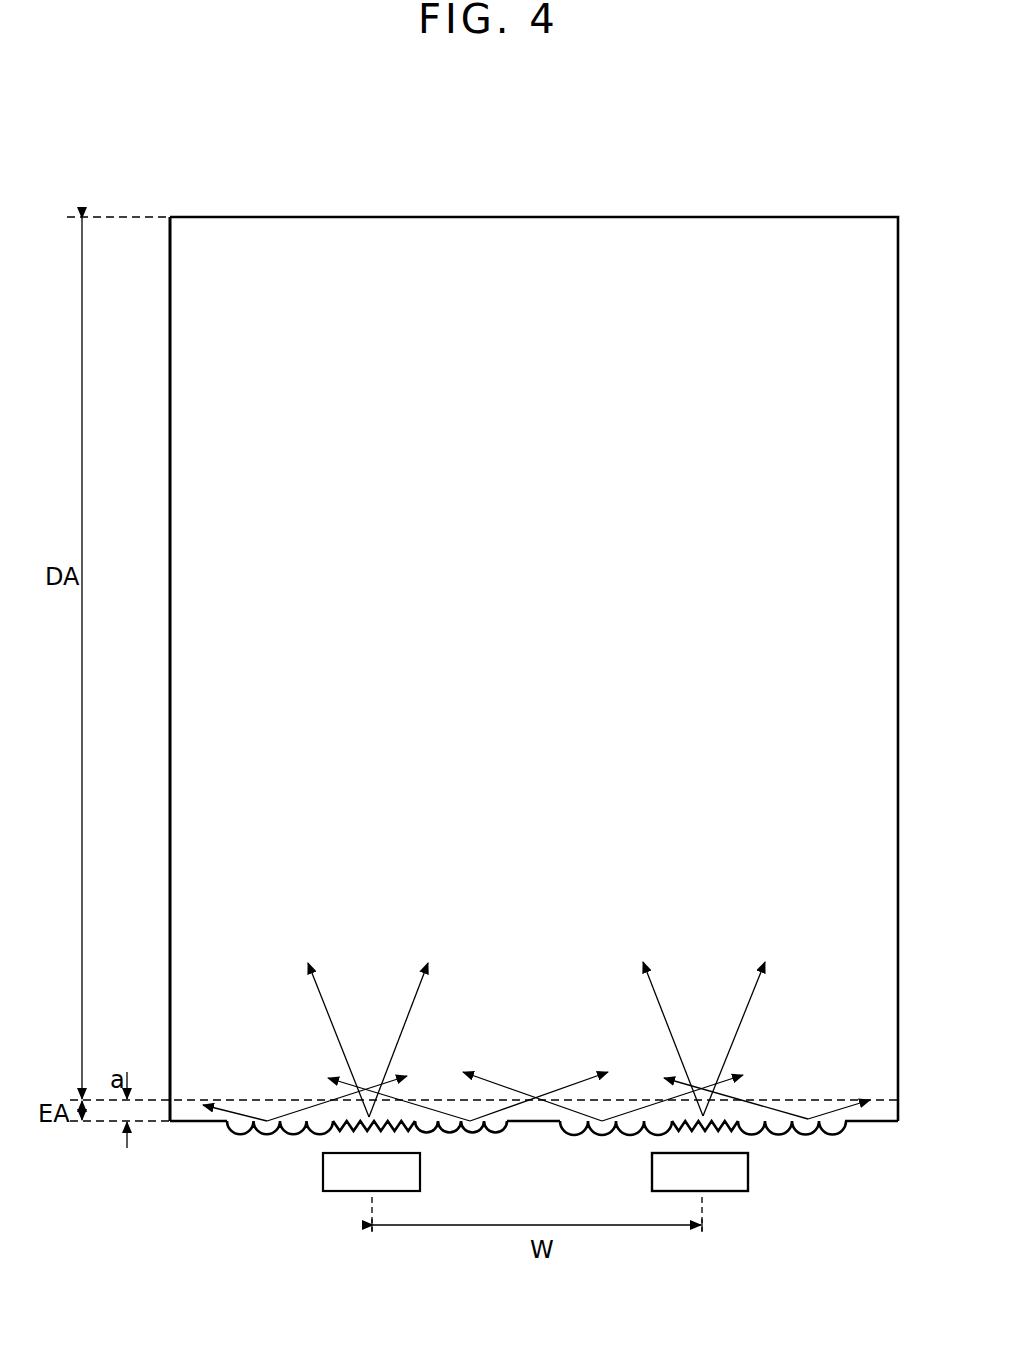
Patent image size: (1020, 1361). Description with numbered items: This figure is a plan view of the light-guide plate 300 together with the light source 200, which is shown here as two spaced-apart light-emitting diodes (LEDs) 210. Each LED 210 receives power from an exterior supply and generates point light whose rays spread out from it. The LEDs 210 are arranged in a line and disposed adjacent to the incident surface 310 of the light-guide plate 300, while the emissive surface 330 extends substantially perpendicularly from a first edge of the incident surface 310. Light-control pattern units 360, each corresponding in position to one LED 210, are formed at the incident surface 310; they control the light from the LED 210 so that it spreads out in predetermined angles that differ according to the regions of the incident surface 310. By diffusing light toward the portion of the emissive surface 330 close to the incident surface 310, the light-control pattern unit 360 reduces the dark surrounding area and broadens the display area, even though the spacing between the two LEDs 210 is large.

The light-guide plate 300 is at (160, 200).
The emissive surface 330 is at (183, 378).
The incident surface 310 is at (879, 1123).
The light-control pattern unit 360 is at (282, 1138).
The light source 200 is at (337, 1197).
The light-emitting diode (LED) 210 is at (723, 1182).